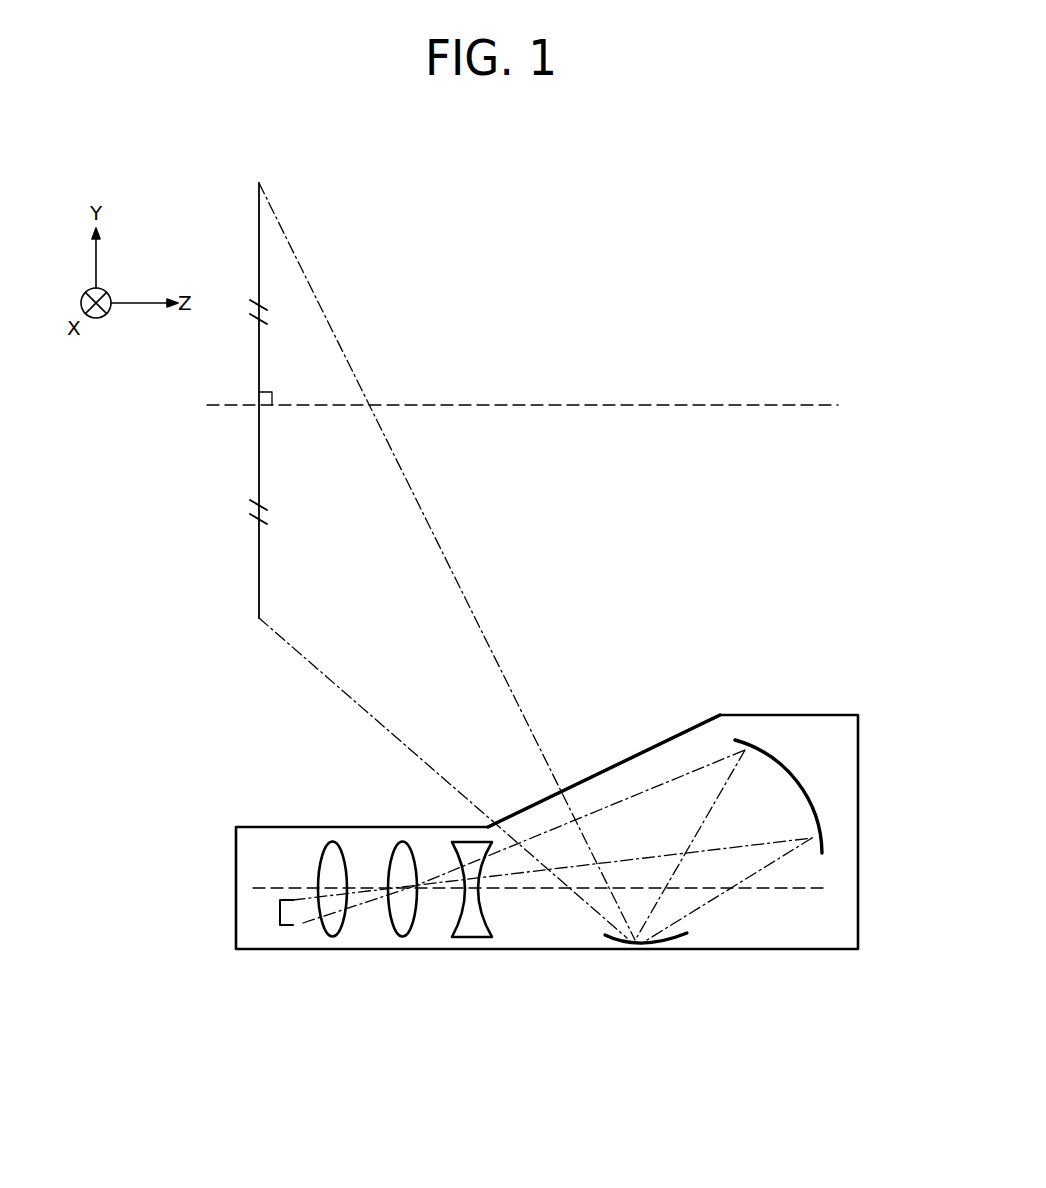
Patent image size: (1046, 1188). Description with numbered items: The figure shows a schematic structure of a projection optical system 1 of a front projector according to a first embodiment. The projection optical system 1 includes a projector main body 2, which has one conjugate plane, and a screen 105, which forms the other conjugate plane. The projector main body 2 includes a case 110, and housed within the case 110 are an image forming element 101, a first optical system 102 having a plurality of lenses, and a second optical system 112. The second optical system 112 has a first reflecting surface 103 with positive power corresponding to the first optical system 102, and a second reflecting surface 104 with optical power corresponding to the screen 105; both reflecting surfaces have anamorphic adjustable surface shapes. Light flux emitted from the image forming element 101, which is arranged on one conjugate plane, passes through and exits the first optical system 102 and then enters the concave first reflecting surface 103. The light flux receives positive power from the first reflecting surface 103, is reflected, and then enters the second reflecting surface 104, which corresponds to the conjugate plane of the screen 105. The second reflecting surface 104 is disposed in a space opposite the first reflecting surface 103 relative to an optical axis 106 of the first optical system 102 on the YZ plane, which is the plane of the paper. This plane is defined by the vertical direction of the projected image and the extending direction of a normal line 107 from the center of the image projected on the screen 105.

The projection optical system 1 is at (703, 280).
The projector main body 2 is at (622, 747).
The image forming element 101 is at (278, 920).
The first optical system 102 is at (503, 937).
The first reflecting surface 103 is at (775, 753).
The second reflecting surface 104 is at (637, 942).
The screen 105 is at (259, 457).
The optical axis 106 is at (775, 890).
The normal line 107 is at (743, 405).
The case 110 is at (858, 823).
The second optical system 112 is at (815, 776).